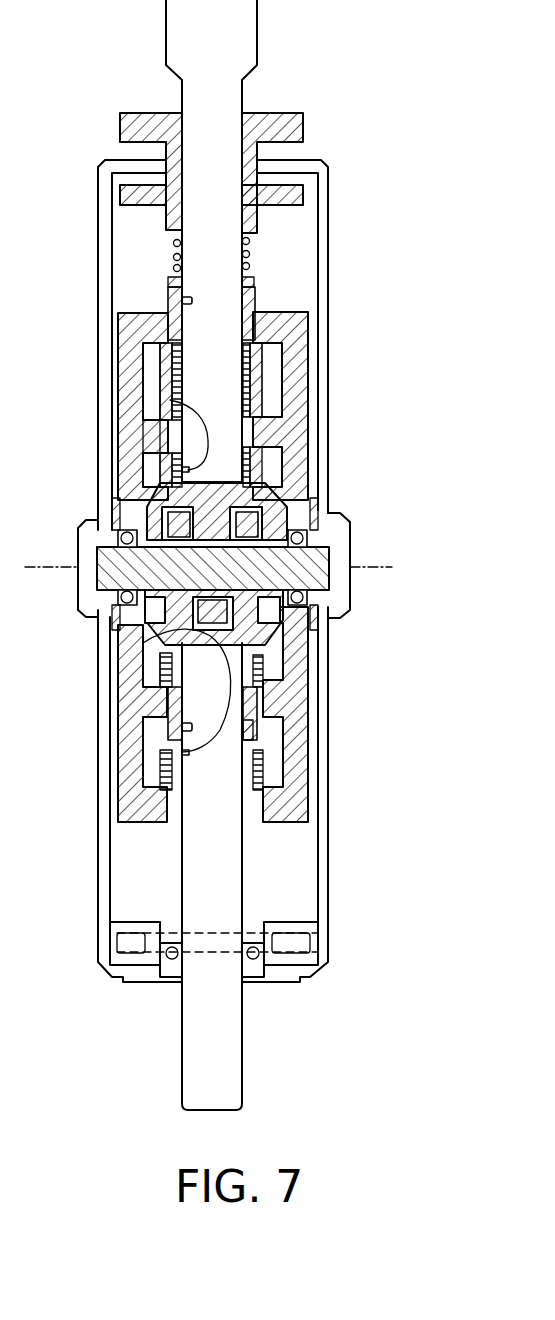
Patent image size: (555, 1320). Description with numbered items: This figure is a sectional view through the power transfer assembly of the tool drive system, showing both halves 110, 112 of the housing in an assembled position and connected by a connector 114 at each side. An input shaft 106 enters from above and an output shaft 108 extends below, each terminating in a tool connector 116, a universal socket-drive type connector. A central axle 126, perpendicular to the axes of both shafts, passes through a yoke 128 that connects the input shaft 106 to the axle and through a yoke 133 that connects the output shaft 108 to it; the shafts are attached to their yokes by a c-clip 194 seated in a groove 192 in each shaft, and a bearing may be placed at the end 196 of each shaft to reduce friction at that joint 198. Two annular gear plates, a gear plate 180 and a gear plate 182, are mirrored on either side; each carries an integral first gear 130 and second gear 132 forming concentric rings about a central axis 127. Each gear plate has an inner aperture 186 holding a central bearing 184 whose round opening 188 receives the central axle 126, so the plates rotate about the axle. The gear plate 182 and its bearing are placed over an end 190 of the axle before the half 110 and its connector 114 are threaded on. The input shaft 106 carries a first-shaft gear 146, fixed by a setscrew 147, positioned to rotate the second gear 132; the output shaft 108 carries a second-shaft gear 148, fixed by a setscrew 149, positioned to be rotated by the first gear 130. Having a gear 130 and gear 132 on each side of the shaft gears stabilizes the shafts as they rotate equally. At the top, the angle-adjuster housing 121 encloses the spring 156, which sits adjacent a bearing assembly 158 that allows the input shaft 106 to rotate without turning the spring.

The input shaft 106 is at (227, 97).
The output shaft 108 is at (243, 882).
The half 110 is at (328, 190).
The half 112 is at (97, 198).
The connector 114 is at (338, 515).
The tool connector 116 is at (257, 32).
The housing 121 is at (302, 128).
The central axle 126 is at (350, 533).
The central axis 127 is at (27, 567).
The yoke 128 is at (255, 470).
The first gear 130 is at (265, 410).
The second gear 132 is at (298, 320).
The yoke 133 is at (260, 640).
The first-shaft gear 146 is at (255, 302).
The setscrew 147 is at (181, 300).
The second-shaft gear 148 is at (258, 733).
The setscrew 149 is at (170, 730).
The spring 156 is at (249, 241).
The bearing assembly 158 is at (254, 277).
The gear plate 180 is at (157, 437).
The gear plate 182 is at (310, 375).
The central bearing 184 is at (123, 523).
The inner aperture 186 is at (115, 627).
The opening 188 is at (120, 542).
The end 190 is at (330, 563).
The groove 192 is at (258, 455).
The c-clip 194 is at (167, 470).
The end 196 is at (170, 400).
The joint 198 is at (167, 497).